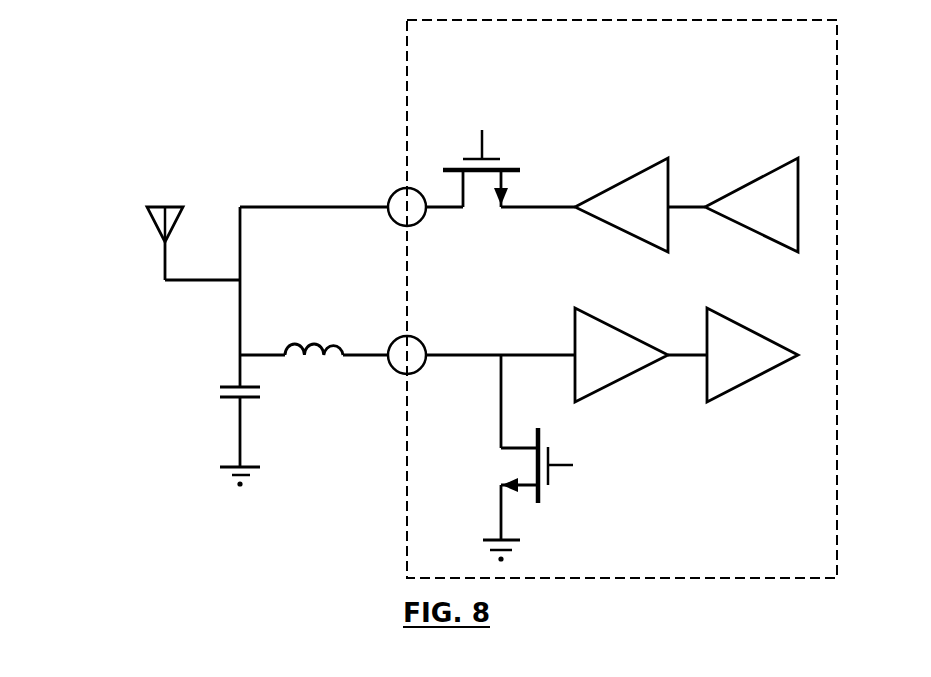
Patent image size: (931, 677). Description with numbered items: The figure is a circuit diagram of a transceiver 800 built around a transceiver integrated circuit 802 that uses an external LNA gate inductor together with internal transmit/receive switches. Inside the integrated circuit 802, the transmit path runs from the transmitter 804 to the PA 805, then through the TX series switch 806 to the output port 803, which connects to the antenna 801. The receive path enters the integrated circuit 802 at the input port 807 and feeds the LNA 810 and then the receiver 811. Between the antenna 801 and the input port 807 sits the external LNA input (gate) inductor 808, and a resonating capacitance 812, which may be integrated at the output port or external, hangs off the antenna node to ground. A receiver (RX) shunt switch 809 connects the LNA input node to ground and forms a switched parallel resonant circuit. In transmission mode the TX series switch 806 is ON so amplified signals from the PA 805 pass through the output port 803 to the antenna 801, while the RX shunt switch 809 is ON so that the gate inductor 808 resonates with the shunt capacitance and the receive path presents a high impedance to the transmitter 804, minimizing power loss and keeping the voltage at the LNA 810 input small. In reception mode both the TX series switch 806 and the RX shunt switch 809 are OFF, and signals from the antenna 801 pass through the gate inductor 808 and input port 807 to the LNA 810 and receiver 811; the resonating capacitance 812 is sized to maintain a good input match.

The transceiver 800 is at (226, 70).
The antenna 801 is at (148, 218).
The transceiver integrated circuit 802 is at (737, 580).
The output port 803 is at (393, 192).
The transmitter 804 is at (797, 231).
The PA 805 is at (665, 231).
The TX series switch 806 is at (508, 165).
The input port 807 is at (402, 333).
The external LNA input (gate) inductor 808 is at (313, 330).
The receiver (RX) shunt switch 809 is at (497, 468).
The LNA 810 is at (612, 380).
The receiver 811 is at (743, 383).
The resonating capacitance 812 is at (215, 419).